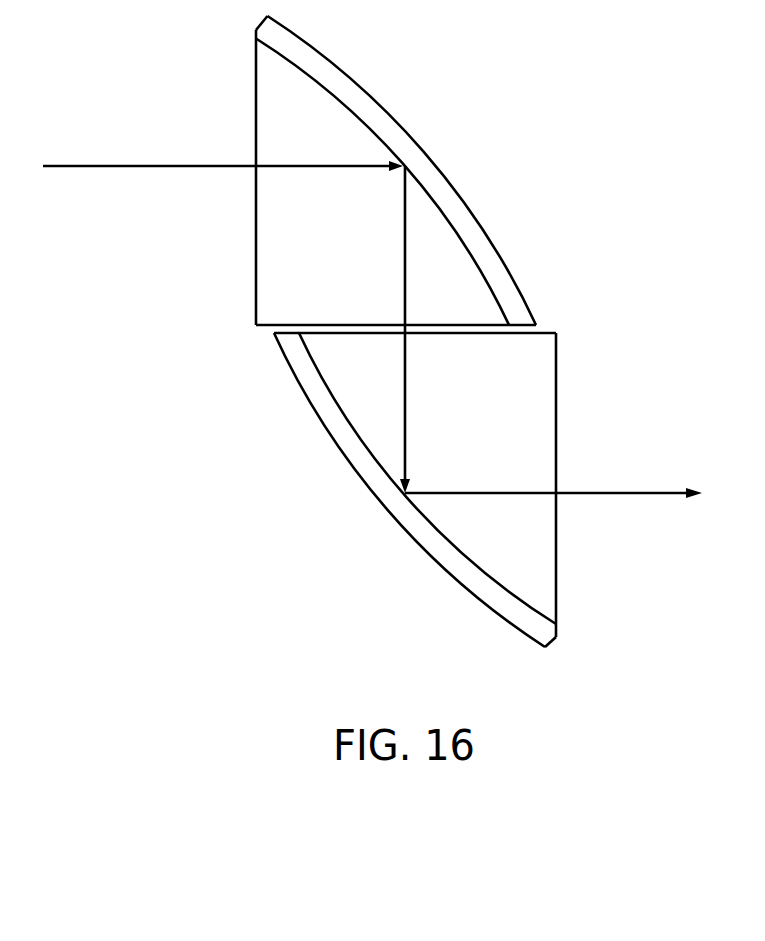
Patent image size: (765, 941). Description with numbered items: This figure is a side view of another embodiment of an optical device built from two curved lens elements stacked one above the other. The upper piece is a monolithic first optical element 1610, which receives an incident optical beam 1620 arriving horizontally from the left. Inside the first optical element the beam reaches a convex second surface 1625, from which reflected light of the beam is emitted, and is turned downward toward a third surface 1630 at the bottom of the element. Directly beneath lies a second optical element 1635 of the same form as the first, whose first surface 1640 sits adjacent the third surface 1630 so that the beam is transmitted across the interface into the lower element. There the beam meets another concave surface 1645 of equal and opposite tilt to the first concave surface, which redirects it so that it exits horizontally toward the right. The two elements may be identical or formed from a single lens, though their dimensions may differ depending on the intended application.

The first optical element 1610 is at (353, 71).
The incident optical beam 1620 is at (157, 165).
The second surface 1625 is at (432, 184).
The third surface 1630 is at (452, 320).
The first surface of the second optical element 1640 is at (518, 338).
The concave surface 1645 is at (386, 484).
The second optical element 1635 is at (458, 596).